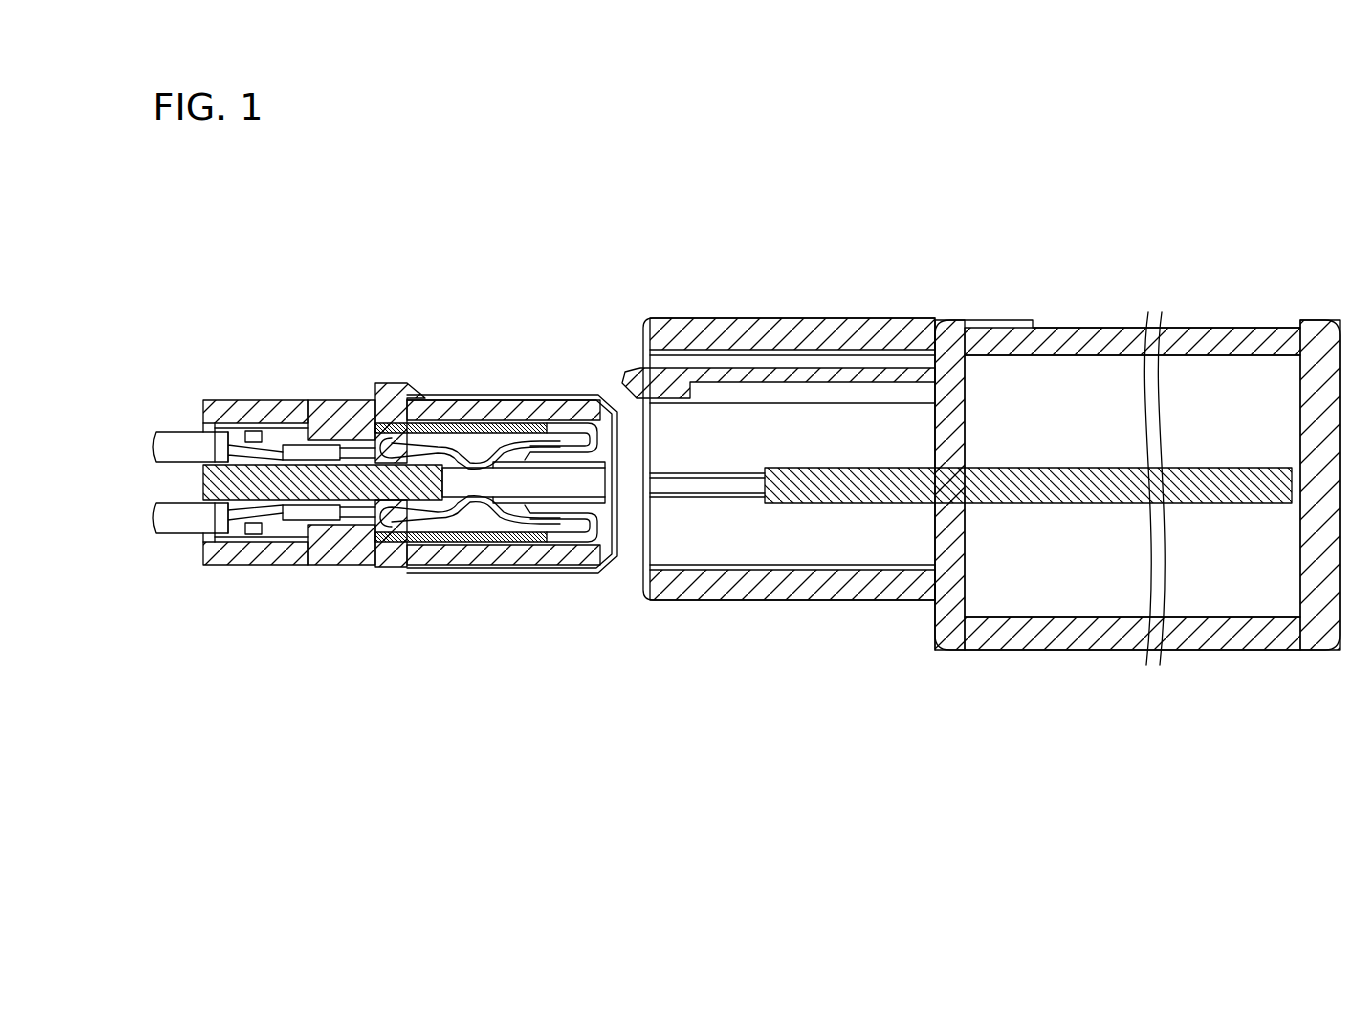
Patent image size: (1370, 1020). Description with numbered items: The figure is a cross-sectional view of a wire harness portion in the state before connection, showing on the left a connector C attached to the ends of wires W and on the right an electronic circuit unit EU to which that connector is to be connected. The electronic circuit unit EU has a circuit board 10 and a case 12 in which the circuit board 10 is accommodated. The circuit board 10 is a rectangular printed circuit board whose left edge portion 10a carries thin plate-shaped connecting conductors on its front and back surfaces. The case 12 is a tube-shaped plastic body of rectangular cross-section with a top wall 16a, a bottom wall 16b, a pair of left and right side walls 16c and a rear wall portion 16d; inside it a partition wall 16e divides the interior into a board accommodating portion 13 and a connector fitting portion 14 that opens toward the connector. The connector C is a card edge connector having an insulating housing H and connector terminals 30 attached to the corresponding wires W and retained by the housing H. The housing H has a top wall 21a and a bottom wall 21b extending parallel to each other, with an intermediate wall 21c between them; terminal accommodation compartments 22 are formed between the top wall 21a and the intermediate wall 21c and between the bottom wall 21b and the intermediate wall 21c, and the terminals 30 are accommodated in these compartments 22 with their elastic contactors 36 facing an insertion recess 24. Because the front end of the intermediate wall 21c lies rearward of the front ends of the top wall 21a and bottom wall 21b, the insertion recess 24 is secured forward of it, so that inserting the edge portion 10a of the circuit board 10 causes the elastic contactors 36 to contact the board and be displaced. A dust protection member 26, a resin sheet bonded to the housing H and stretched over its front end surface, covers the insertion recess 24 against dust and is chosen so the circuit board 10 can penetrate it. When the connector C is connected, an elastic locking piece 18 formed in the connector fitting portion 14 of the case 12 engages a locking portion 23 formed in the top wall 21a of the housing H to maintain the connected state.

The connector C is at (308, 360).
The wires W is at (178, 458).
The housing H is at (398, 574).
The top wall 21a is at (447, 410).
The bottom wall 21b is at (430, 570).
The intermediate wall 21c is at (347, 563).
The terminal accommodation compartments 22 is at (275, 430).
The locking portion 23 is at (388, 388).
The insertion recess 24 is at (563, 490).
The dust protection member 26 is at (620, 490).
The connector terminals 30 is at (510, 426).
The elastic contactors 36 is at (478, 424).
The circuit board 10 is at (1036, 464).
The edge portion 10a is at (808, 490).
The case 12 is at (1050, 236).
The board accommodating portion 13 is at (1055, 340).
The connector fitting portion 14 is at (810, 336).
The elastic locking piece 18 is at (675, 385).
The top wall 16a is at (1118, 336).
The bottom wall 16b is at (1050, 638).
The side walls 16c is at (1248, 388).
The rear wall portion 16d is at (1325, 445).
The partition wall 16e is at (988, 572).
The electronic circuit unit EU is at (1213, 683).